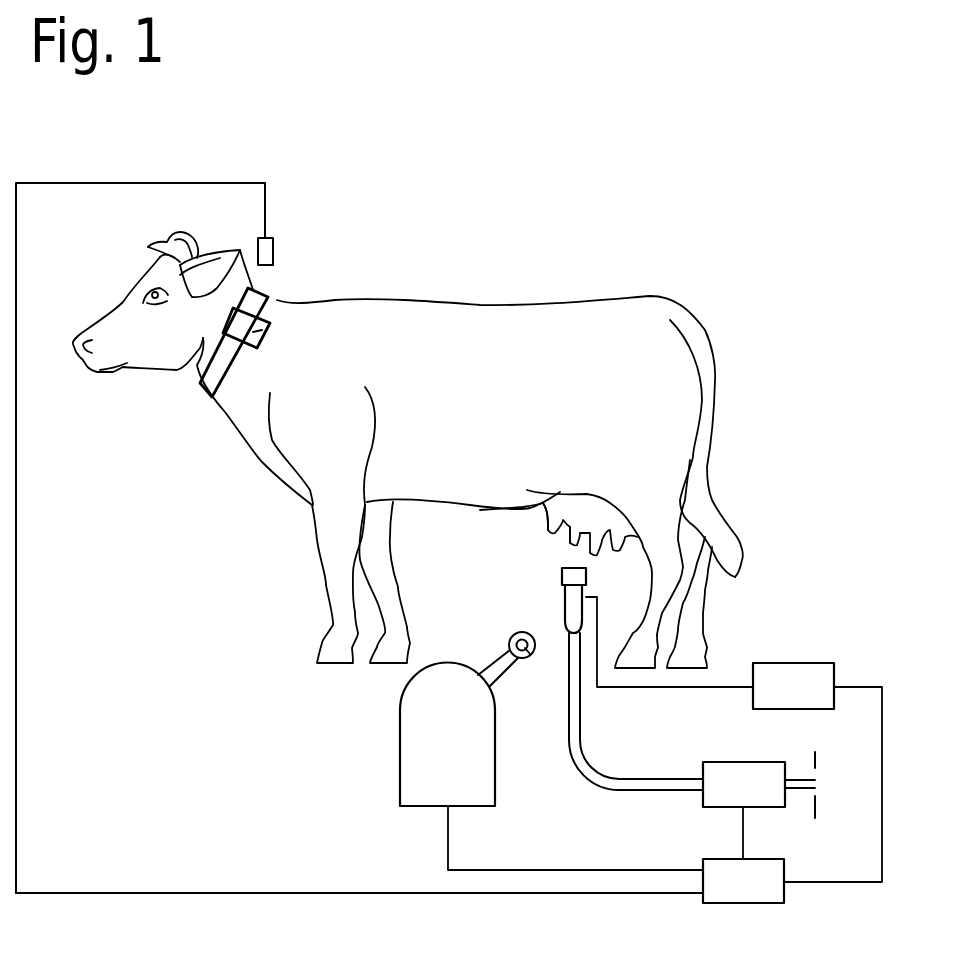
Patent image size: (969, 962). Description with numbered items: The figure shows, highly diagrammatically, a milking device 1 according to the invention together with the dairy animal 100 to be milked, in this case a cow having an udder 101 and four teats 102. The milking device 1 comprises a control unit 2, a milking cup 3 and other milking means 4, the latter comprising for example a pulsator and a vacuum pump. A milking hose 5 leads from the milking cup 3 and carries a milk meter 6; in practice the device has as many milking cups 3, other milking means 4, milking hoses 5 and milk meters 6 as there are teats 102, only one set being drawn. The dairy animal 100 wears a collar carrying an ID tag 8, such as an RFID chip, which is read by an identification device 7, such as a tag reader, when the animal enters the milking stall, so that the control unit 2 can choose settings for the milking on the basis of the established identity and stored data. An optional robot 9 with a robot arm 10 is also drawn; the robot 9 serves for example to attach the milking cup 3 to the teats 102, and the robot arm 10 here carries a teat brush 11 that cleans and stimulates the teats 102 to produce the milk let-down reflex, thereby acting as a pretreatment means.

The milking device 1 is at (693, 273).
The control unit 2 is at (753, 882).
The milking cup 3 is at (575, 597).
The other milking means 4 is at (792, 680).
The milking hose 5 is at (633, 790).
The milk meter 6 is at (728, 793).
The identification device 7 is at (265, 250).
The ID tag 8 is at (262, 337).
The robot 9 is at (428, 771).
The robot arm 10 is at (498, 659).
The teat brush 11 is at (522, 659).
The dairy animal 100 is at (482, 390).
The udder 101 is at (548, 505).
The teat 102 is at (577, 541).